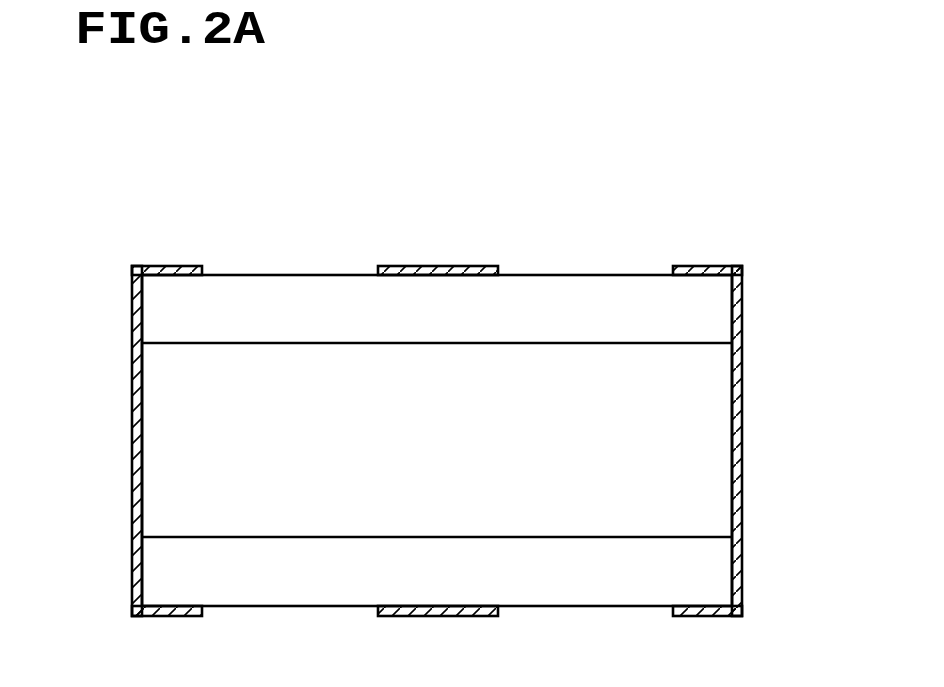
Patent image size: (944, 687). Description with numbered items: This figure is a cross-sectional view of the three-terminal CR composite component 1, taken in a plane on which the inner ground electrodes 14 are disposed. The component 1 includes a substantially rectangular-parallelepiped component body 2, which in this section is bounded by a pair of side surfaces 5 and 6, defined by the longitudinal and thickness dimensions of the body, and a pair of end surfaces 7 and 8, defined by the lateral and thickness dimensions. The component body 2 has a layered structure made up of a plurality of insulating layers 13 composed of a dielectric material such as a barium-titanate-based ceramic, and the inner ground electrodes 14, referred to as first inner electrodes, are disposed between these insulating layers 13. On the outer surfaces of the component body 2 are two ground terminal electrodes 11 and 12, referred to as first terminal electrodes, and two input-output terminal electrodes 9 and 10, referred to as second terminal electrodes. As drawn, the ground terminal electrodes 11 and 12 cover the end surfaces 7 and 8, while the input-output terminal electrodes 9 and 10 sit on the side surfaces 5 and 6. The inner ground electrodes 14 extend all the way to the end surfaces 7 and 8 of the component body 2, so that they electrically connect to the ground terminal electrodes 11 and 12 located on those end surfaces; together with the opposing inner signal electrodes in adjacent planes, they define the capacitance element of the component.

The three-terminal CR composite component 1 is at (112, 152).
The component body 2 is at (581, 268).
The side surface 5 is at (587, 606).
The side surface 6 is at (277, 275).
The end surface 7 is at (733, 430).
The end surface 8 is at (140, 463).
The input-output terminal electrode 9 is at (438, 612).
The input-output terminal electrode 10 is at (437, 270).
The ground terminal electrode 11 is at (742, 545).
The ground terminal electrode 12 is at (140, 565).
The insulating layer 13 is at (699, 321).
The inner ground electrode 14 is at (270, 500).